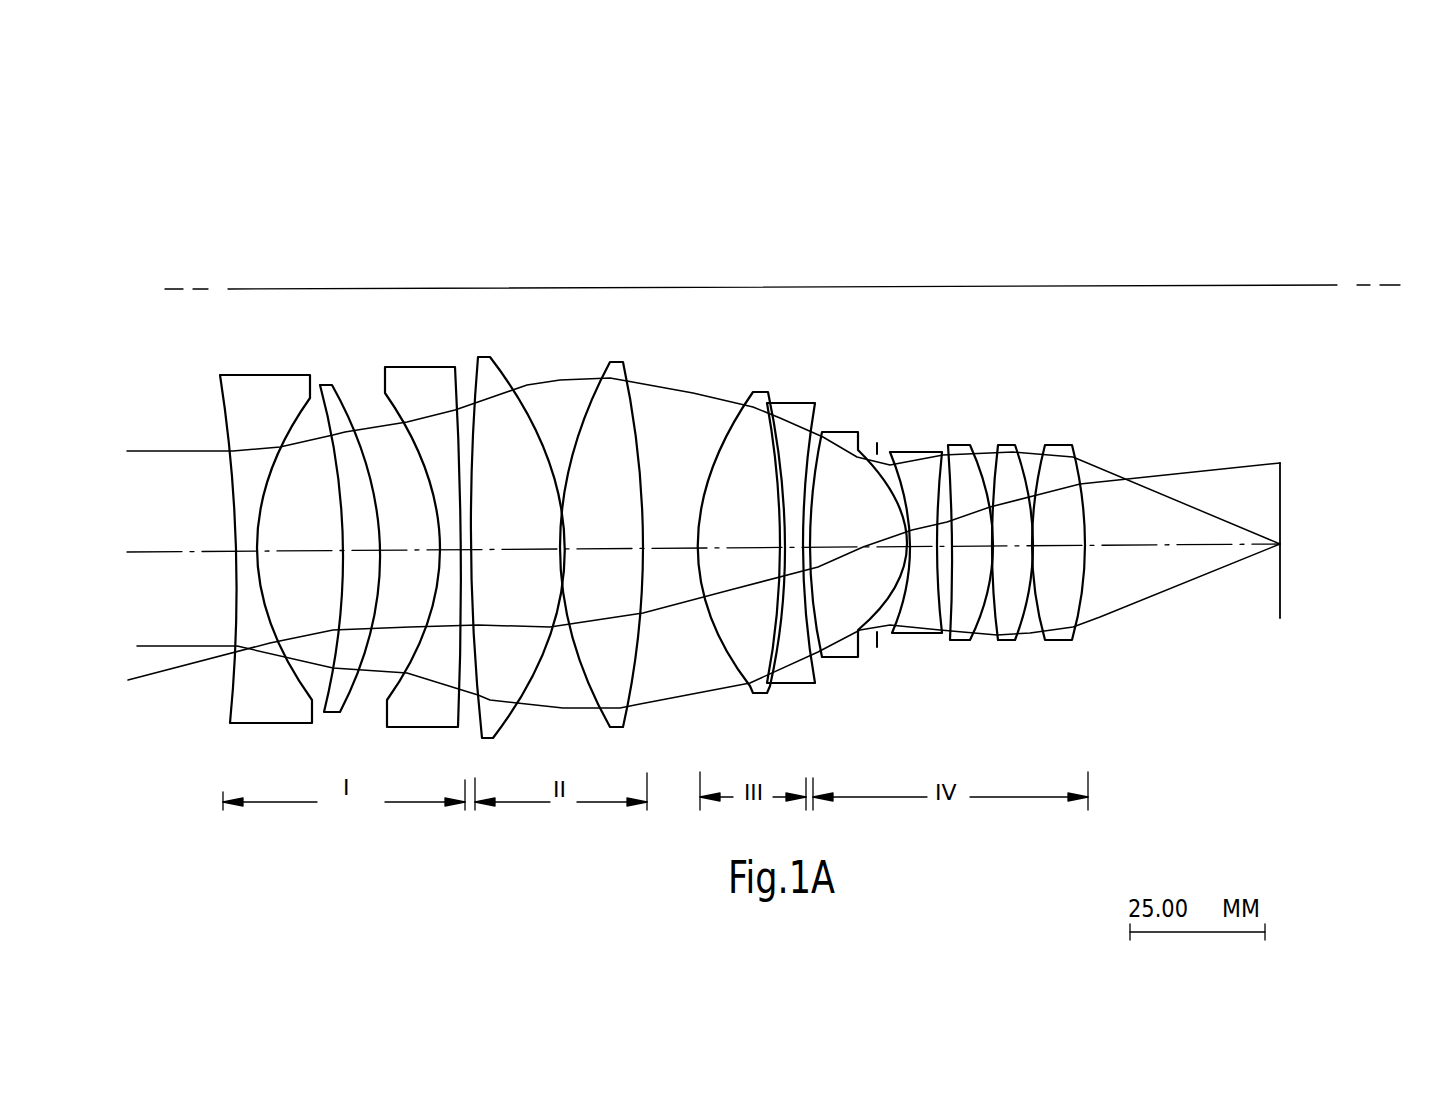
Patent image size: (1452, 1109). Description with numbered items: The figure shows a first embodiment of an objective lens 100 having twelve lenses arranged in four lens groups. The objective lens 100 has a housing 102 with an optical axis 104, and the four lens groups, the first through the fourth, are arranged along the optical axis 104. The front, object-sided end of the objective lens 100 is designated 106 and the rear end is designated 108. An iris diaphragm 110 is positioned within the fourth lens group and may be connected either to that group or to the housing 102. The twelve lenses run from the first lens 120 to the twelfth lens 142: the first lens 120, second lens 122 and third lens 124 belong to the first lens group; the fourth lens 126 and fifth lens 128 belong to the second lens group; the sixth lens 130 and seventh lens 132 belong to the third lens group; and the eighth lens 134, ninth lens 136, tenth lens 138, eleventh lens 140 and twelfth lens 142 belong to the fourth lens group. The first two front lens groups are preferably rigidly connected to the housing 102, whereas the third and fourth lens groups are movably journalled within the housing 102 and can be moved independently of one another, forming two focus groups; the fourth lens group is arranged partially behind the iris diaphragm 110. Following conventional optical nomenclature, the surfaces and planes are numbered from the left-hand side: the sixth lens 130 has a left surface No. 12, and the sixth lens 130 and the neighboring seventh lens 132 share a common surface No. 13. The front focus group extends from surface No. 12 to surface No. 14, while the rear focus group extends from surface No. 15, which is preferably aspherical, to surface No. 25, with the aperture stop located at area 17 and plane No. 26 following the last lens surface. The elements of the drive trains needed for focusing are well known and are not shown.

The objective lens 100 is at (736, 391).
The housing 102 is at (1132, 285).
The optical axis 104 is at (1188, 544).
The front end 106 is at (115, 317).
The rear end 108 is at (1378, 379).
The iris diaphragm 110 is at (880, 458).
The surface No. 12 is at (753, 380).
The surface No. 13 is at (767, 383).
The surface No. 14 is at (815, 392).
The surface No. 15 is at (825, 421).
The aperture stop area 17 is at (878, 433).
The surface No. 25 is at (1075, 430).
The plane No. 26 is at (1280, 453).
The first lens 120 is at (258, 388).
The second lens 122 is at (336, 393).
The third lens 124 is at (420, 383).
The fourth lens 126 is at (492, 378).
The fifth lens 128 is at (612, 372).
The sixth lens 130 is at (750, 662).
The seventh lens 132 is at (795, 672).
The eighth lens 134 is at (847, 653).
The ninth lens 136 is at (913, 632).
The tenth lens 138 is at (963, 638).
The eleventh lens 140 is at (1018, 640).
The twelfth lens 142 is at (1078, 632).